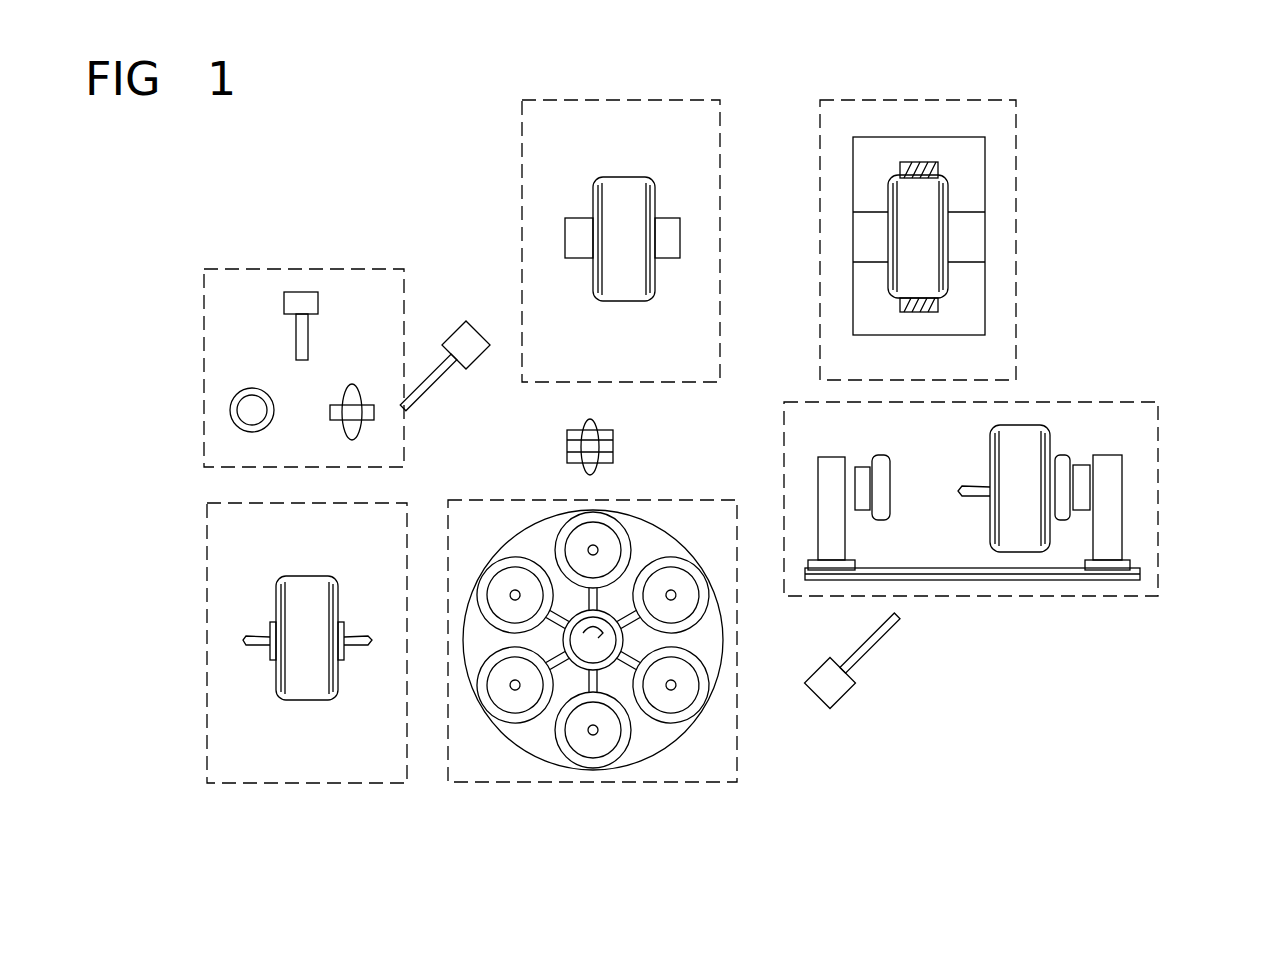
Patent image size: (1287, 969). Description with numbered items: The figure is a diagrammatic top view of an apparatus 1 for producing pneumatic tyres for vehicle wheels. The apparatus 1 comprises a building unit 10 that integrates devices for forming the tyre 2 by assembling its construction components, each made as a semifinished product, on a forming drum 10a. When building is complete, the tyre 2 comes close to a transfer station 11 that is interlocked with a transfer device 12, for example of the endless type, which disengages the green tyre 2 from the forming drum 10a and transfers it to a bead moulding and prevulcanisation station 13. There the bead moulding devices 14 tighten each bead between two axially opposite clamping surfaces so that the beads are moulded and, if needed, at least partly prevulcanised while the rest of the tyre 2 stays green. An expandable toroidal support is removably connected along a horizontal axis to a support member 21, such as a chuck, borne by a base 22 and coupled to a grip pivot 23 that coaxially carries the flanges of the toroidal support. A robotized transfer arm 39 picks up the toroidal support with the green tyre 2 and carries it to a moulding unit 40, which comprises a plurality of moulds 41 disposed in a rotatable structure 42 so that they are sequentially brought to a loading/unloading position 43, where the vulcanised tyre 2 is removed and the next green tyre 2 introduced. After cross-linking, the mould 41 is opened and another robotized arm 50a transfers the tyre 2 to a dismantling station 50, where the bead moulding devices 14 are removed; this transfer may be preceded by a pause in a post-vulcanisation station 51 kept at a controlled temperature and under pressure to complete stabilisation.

The apparatus for producing pneumatic tyres 1 is at (1085, 717).
The tyre 2 is at (633, 170).
The building unit 10 is at (613, 100).
The forming drum 10a is at (578, 225).
The transfer station 11 is at (1016, 232).
The transfer device 12 is at (925, 140).
The bead moulding and prevulcanisation station 13 is at (1156, 402).
The bead moulding devices 14 is at (1070, 445).
The support member 21 is at (1095, 490).
The base 22 is at (1110, 545).
The grip pivot 23 is at (255, 640).
The robotized transfer arm 39 is at (848, 678).
The moulding unit 40 is at (740, 718).
The moulds 41 is at (516, 560).
The rotatable structure 42 is at (590, 652).
The loading/unloading position 43 is at (623, 436).
The dismantling station 50 is at (355, 269).
The robotized arm 50a is at (468, 330).
The post-vulcanisation station 51 is at (205, 540).